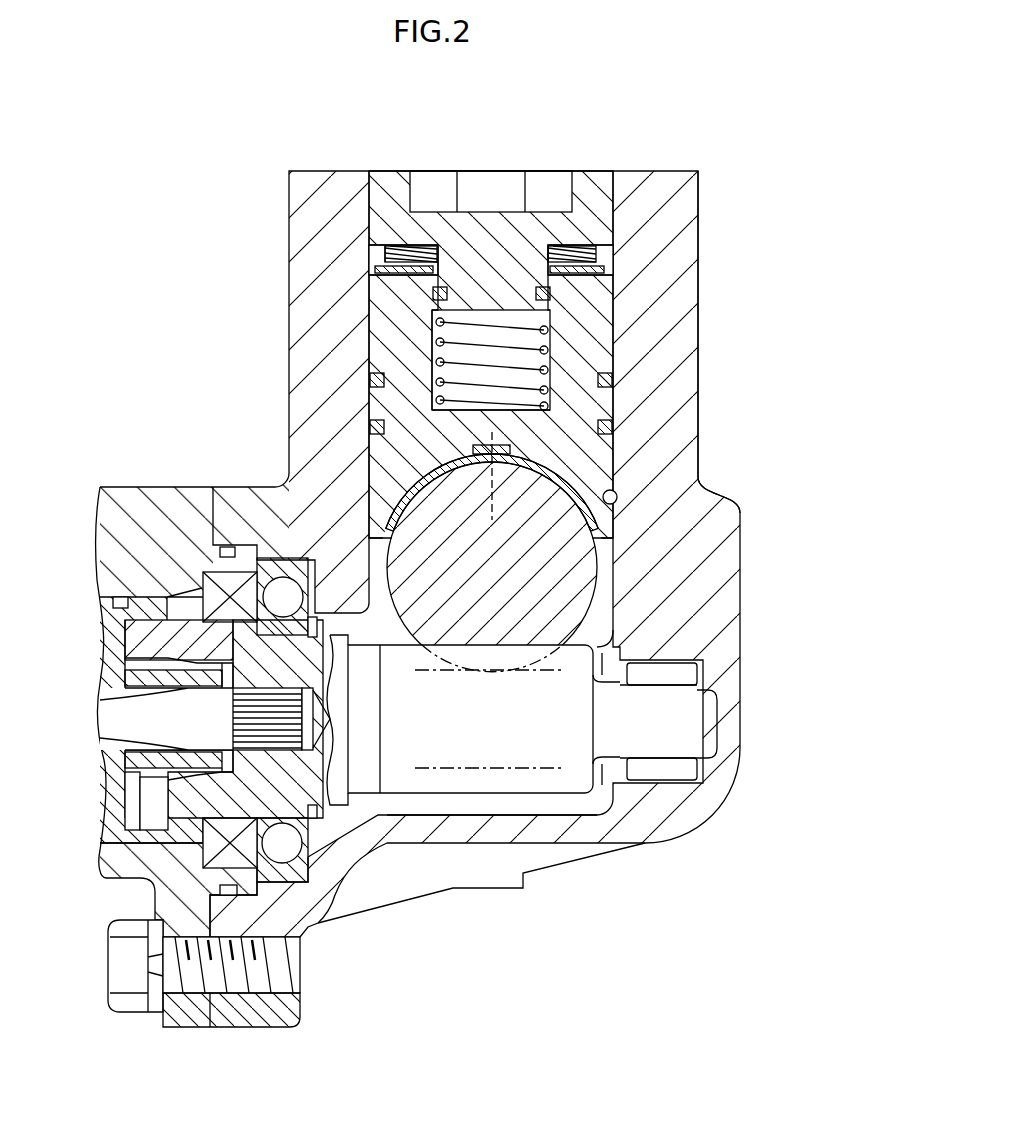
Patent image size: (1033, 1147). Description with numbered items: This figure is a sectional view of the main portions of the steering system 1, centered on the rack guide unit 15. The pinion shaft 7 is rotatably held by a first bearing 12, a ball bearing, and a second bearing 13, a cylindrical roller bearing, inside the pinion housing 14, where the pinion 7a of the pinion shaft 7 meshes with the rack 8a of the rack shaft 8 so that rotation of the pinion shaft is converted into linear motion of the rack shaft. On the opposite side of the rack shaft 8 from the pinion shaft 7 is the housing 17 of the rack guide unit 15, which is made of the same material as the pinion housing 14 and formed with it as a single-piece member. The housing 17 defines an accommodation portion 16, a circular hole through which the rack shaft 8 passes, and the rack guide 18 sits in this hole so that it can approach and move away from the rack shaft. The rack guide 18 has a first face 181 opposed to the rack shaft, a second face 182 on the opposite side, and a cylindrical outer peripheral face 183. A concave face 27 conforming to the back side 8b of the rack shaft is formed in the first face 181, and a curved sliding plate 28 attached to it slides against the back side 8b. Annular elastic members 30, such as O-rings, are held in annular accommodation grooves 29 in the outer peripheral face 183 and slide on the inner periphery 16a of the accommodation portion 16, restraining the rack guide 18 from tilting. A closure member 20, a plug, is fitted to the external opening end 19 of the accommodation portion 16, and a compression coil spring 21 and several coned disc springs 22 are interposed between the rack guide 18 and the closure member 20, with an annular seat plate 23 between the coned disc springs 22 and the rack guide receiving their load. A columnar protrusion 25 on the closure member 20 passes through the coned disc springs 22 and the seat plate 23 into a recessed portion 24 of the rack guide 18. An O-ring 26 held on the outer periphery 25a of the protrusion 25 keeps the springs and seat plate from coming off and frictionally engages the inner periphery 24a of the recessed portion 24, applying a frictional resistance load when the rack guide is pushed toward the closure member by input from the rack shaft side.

The steering system 1 is at (145, 472).
The pinion shaft 7 is at (430, 800).
The pinion 7a is at (497, 795).
The rack shaft 8 is at (600, 588).
The rack 8a is at (535, 668).
The back side 8b is at (395, 525).
The first bearing 12 is at (288, 852).
The second bearing 13 is at (668, 772).
The pinion housing 14 is at (572, 832).
The rack guide unit 15 is at (551, 160).
The accommodation portion 16 is at (607, 550).
The inner periphery 16a is at (613, 507).
The housing 17 is at (702, 456).
The rack guide 18 is at (616, 480).
The external opening end 19 is at (371, 203).
The closure member 20 is at (618, 192).
The compression coil spring 21 is at (540, 392).
The coned disc spring 22 is at (598, 250).
The seat plate 23 is at (606, 270).
The recessed portion 24 is at (613, 405).
The inner periphery 24a is at (432, 323).
The columnar protrusion 25 is at (533, 362).
The outer periphery 25a is at (433, 292).
The O-ring 26 is at (551, 293).
The concave face 27 is at (422, 475).
The sliding plate 28 is at (448, 482).
The annular accommodation groove 29 is at (372, 428).
The annular elastic member 30 is at (611, 427).
The first face 181 is at (286, 487).
The second face 182 is at (378, 262).
The outer peripheral face 183 is at (433, 350).